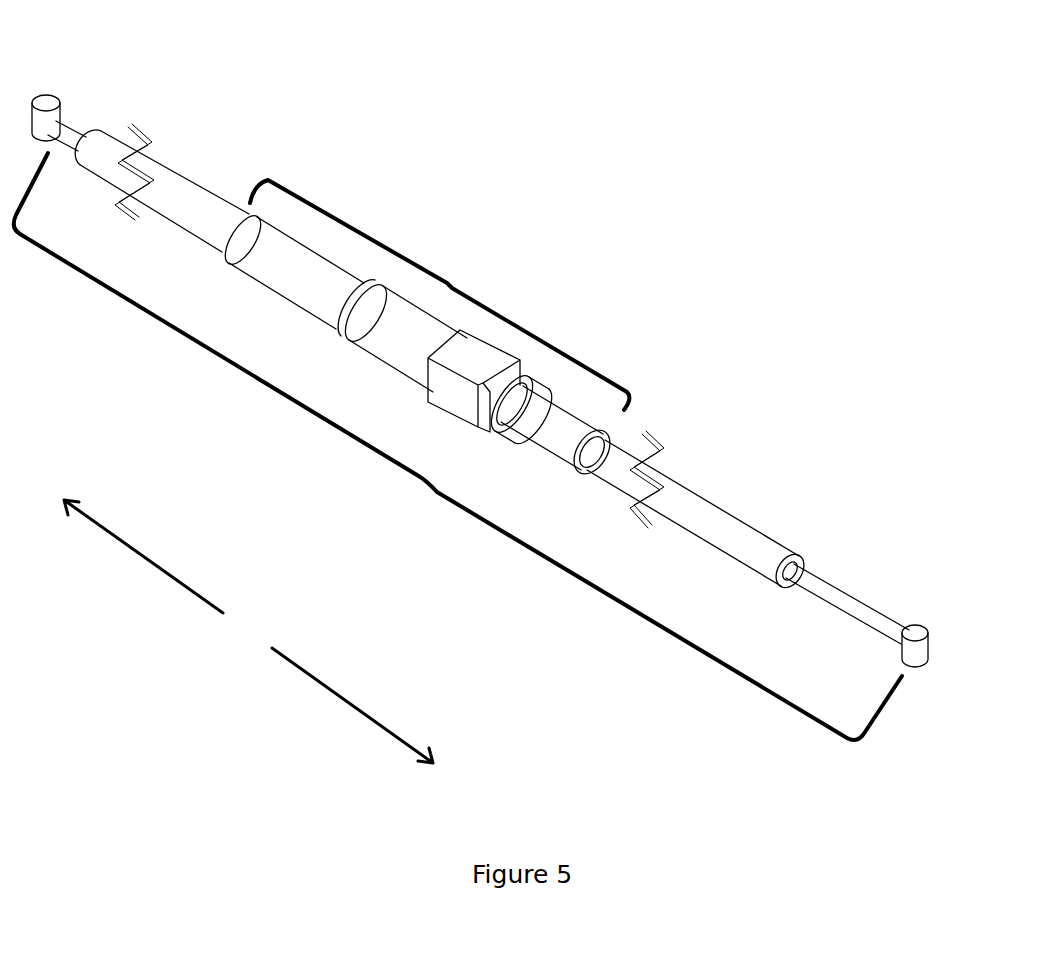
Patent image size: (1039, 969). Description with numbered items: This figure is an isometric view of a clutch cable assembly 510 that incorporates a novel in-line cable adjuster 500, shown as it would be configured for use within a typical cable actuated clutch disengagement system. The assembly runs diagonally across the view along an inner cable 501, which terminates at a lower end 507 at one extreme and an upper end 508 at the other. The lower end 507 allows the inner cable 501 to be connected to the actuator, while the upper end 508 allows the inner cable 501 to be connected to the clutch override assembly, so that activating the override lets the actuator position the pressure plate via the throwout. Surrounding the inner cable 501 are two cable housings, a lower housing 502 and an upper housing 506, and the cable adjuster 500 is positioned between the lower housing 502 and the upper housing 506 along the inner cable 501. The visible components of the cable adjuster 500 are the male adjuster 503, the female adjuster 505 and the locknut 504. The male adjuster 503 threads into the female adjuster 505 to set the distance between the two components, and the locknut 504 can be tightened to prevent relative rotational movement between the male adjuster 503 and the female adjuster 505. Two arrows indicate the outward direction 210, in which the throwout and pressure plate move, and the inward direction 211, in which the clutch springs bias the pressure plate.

The cable adjuster 500 is at (447, 284).
The inner cable 501 is at (829, 597).
The lower housing 502 is at (715, 526).
The male adjuster 503 is at (560, 452).
The locknut 504 is at (481, 427).
The female adjuster 505 is at (415, 370).
The upper housing 506 is at (192, 205).
The lower end 507 is at (914, 632).
The upper end 508 is at (45, 103).
The clutch cable assembly 510 is at (417, 476).
The outward direction 210 is at (143, 556).
The inward direction 211 is at (352, 705).